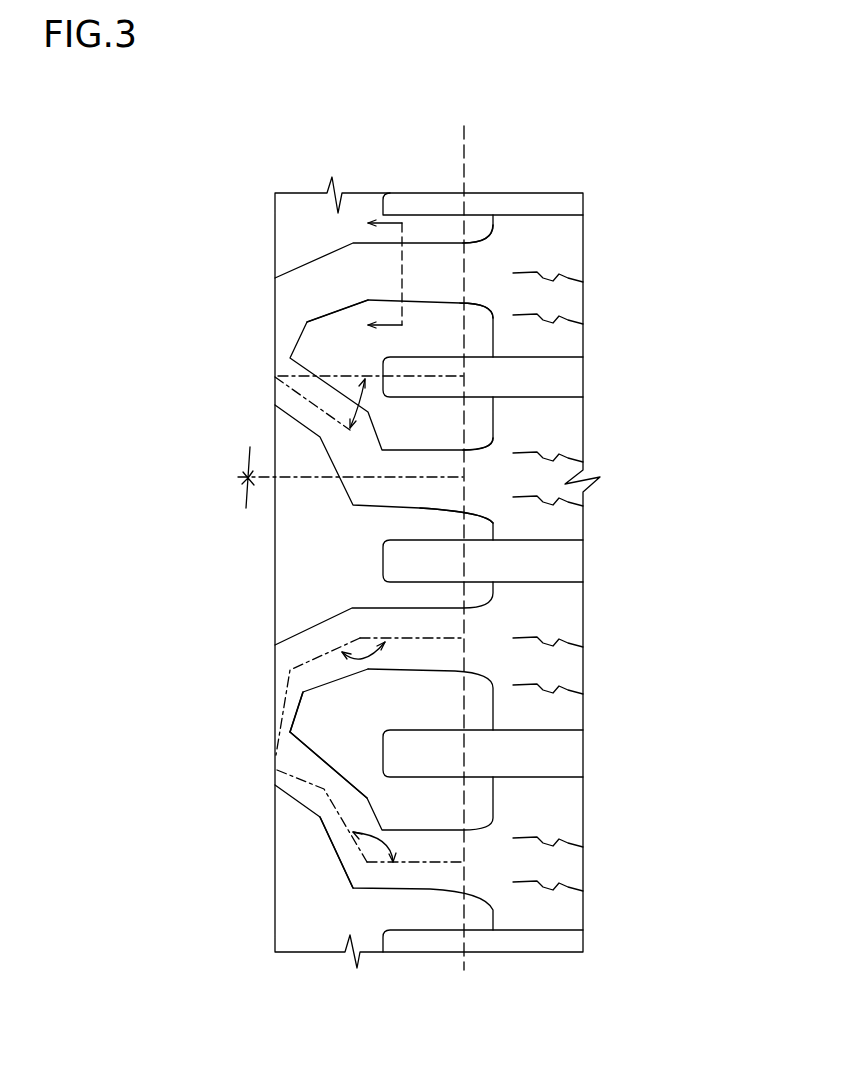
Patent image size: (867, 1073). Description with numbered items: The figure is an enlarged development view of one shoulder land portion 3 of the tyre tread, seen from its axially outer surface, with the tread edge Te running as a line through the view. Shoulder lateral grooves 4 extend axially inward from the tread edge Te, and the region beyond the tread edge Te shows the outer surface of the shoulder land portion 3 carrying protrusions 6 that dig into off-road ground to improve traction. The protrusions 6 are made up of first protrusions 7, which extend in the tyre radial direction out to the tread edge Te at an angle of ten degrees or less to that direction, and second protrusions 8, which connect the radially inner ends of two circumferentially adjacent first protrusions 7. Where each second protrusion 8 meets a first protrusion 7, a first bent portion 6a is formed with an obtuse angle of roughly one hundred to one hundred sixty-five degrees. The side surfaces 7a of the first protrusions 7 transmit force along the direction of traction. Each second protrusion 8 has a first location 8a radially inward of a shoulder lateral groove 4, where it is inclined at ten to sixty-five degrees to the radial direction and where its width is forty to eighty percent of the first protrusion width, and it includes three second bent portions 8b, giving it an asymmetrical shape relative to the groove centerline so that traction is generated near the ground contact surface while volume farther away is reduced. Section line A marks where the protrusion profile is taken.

The shoulder land portion 3 is at (532, 162).
The shoulder lateral groove 4 is at (537, 383).
The protrusion 6 is at (315, 255).
The first bent portion 6a is at (360, 638).
The first protrusion 7 is at (415, 270).
The side surface 7a is at (433, 315).
The second protrusion 8 is at (313, 302).
The first location 8a is at (275, 377).
The second bent portion 8b is at (288, 670).
The tread edge Te is at (462, 535).
The section line A- A is at (373, 277).